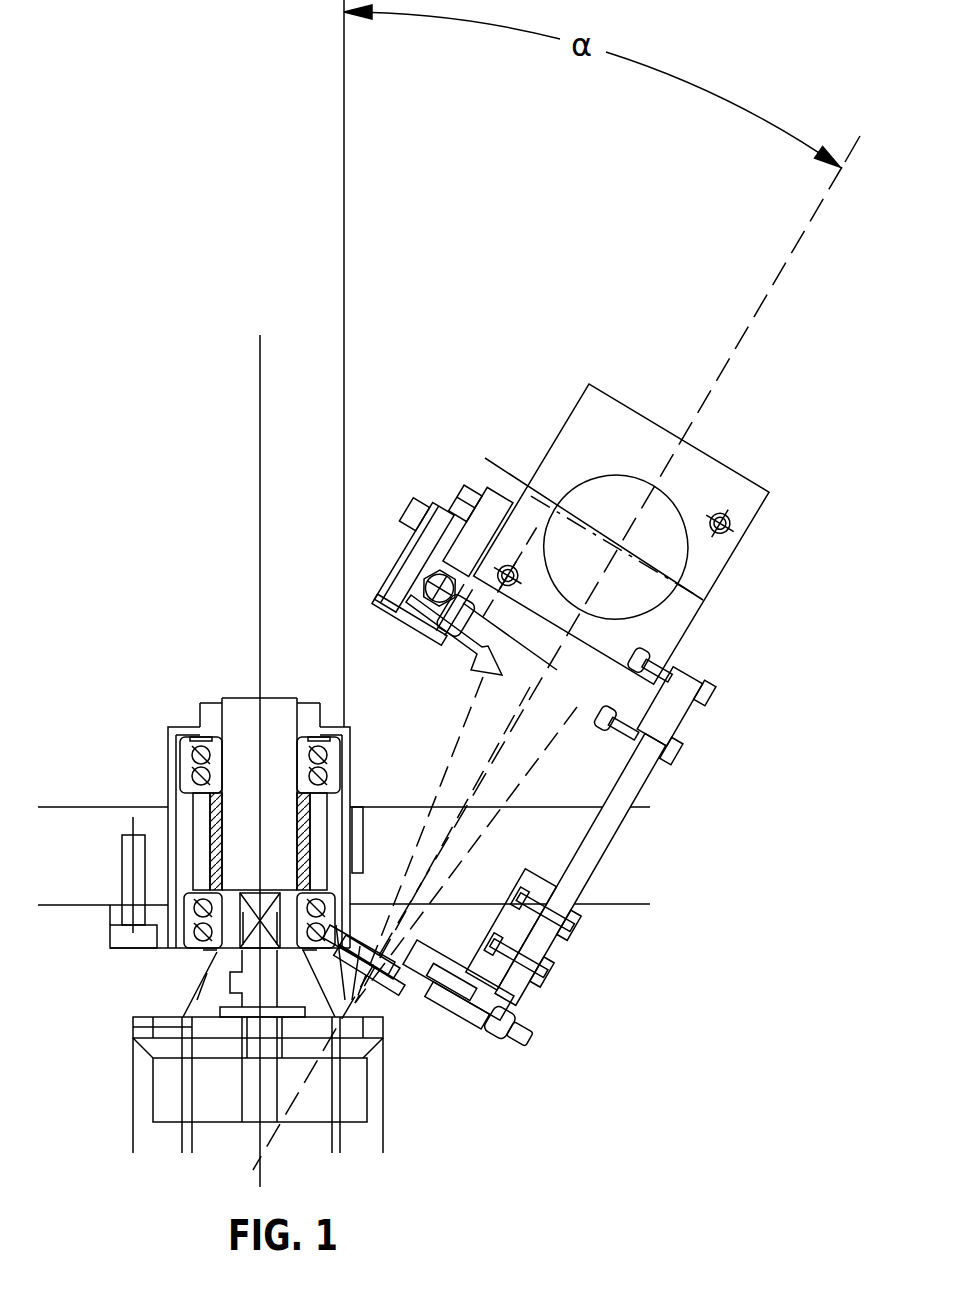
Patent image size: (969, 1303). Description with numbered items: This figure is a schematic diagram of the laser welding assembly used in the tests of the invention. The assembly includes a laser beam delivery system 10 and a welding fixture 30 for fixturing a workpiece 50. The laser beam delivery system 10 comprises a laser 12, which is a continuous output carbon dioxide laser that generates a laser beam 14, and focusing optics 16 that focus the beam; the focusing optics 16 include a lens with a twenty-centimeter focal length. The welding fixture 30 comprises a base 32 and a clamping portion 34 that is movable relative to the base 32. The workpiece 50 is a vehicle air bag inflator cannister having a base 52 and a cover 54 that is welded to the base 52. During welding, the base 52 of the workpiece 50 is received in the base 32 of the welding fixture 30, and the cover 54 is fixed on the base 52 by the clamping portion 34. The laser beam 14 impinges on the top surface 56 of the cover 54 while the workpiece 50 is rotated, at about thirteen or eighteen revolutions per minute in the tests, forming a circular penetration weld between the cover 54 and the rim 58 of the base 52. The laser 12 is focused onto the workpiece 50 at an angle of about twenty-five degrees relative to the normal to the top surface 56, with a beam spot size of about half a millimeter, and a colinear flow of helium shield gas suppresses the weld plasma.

The laser beam delivery system 10 is at (745, 556).
The laser 12 is at (681, 637).
The laser beam 14 is at (373, 1013).
The focusing optics 16 is at (372, 993).
The welding fixture 30 is at (88, 928).
The base 32 is at (385, 1137).
The clamping portion 34 is at (168, 765).
The workpiece 50 is at (227, 1125).
The base 52 is at (367, 1077).
The cover 54 is at (183, 1015).
The top surface 56 is at (250, 978).
The rim 58 is at (133, 1024).